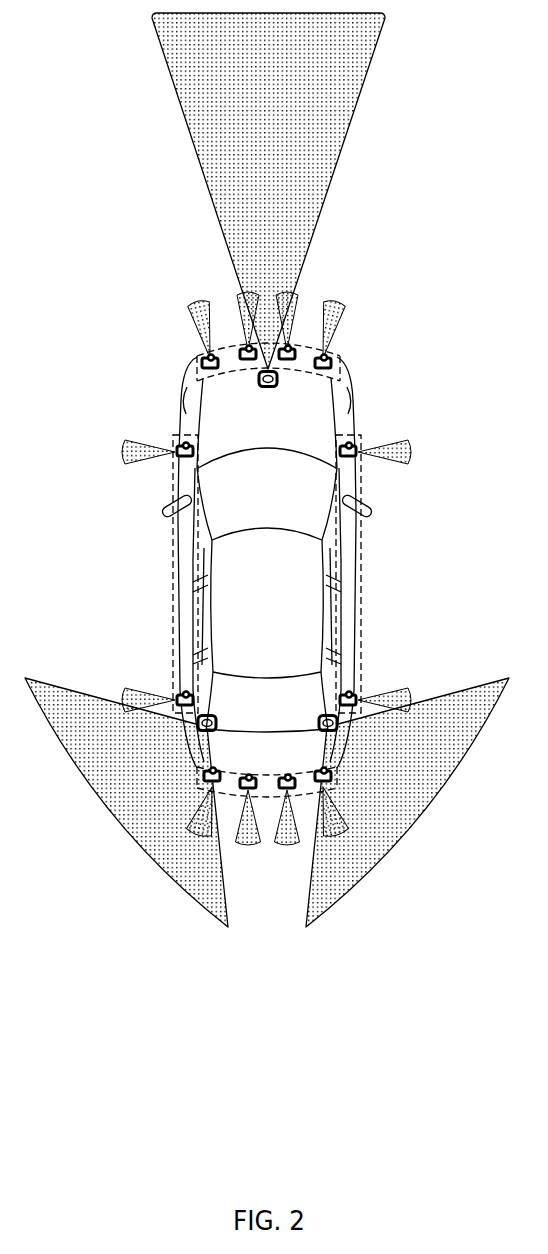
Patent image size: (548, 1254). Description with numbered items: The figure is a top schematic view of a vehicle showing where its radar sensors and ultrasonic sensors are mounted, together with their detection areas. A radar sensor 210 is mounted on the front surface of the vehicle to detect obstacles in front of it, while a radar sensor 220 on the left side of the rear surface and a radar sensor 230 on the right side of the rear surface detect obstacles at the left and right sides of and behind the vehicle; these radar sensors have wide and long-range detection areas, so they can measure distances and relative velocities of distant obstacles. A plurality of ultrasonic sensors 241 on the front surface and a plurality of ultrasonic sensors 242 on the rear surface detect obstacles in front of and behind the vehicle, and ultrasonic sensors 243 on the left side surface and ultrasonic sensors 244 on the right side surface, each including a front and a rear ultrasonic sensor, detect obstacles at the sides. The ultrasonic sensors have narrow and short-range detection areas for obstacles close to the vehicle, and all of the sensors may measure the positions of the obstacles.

The radar sensor 210 is at (268, 388).
The radar sensor 220 is at (197, 732).
The radar sensor 230 is at (339, 733).
The ultrasonic sensors 241 is at (341, 366).
The ultrasonic sensors 242 is at (341, 780).
The ultrasonic sensors 243 is at (173, 576).
The ultrasonic sensors 244 is at (362, 575).